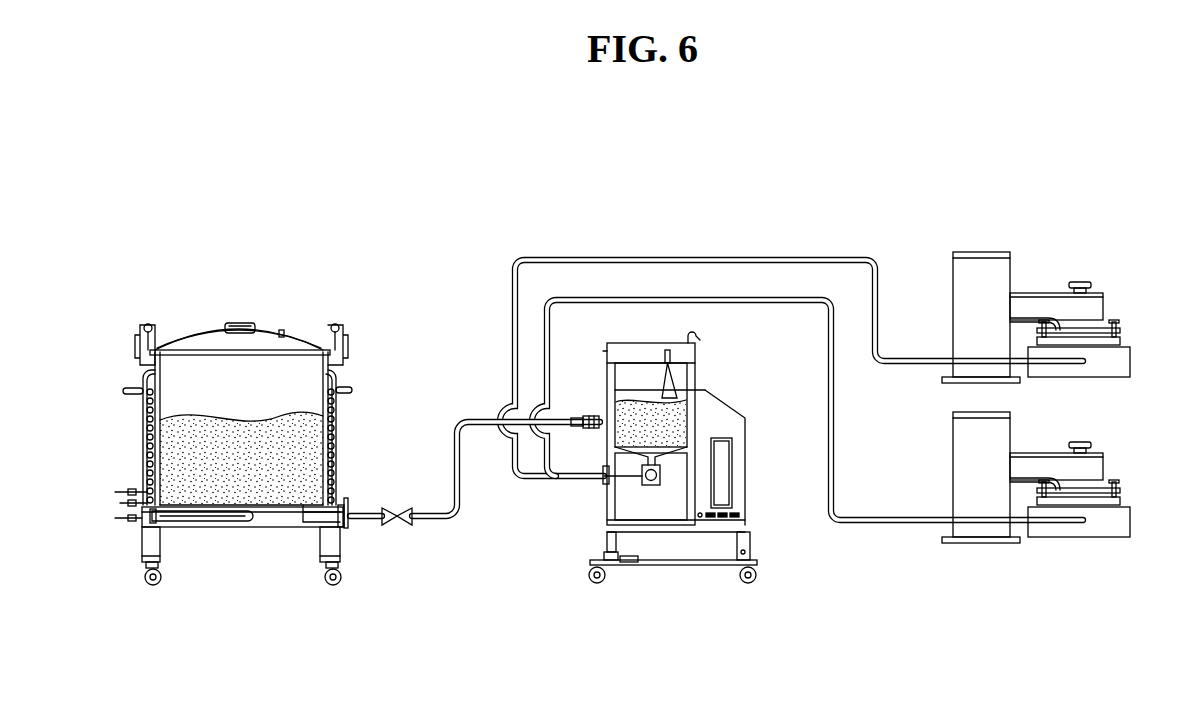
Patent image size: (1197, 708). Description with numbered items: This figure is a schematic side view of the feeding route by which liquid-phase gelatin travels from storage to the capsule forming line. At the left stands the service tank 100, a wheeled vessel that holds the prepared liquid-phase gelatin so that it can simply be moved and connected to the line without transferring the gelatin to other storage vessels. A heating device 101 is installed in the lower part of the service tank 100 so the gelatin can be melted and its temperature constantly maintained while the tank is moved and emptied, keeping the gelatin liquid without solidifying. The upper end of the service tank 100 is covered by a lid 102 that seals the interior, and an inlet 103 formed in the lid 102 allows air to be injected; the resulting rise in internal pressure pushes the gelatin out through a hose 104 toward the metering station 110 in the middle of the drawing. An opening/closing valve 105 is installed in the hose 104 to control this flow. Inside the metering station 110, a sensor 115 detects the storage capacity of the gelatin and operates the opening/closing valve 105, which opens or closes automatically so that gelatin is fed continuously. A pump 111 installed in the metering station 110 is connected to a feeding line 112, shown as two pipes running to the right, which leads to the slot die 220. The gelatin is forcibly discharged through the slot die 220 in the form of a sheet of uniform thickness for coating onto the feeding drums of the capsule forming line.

The service tank 100 is at (288, 424).
The heating device 101 is at (213, 524).
The lid 102 is at (195, 338).
The inlet 103 is at (282, 332).
The hose 104 is at (443, 519).
The opening/closing valve 105 is at (393, 523).
The metering station 110 is at (634, 479).
The pump 111 is at (652, 486).
The feeding line 112 is at (770, 297).
The sensor 115 is at (673, 352).
The slot die 220 is at (1128, 348).